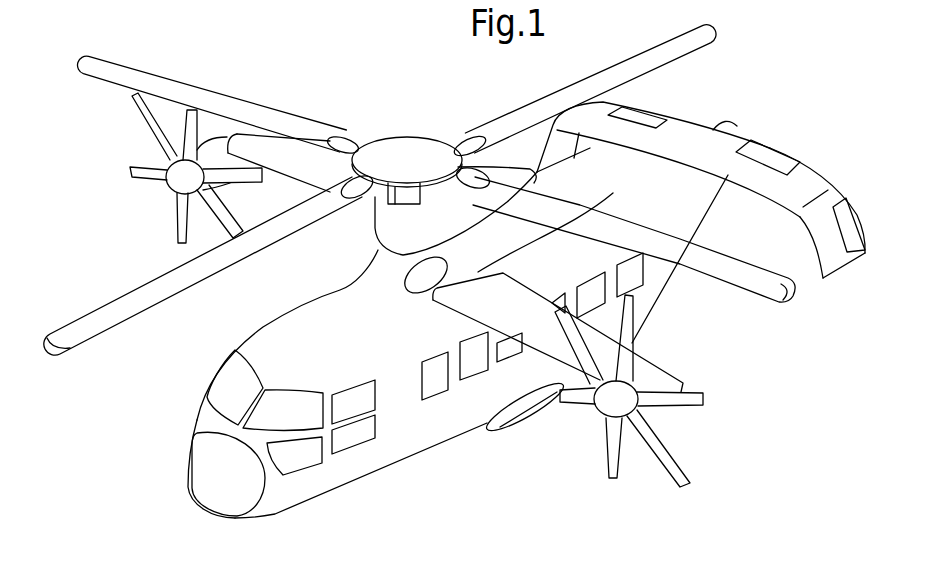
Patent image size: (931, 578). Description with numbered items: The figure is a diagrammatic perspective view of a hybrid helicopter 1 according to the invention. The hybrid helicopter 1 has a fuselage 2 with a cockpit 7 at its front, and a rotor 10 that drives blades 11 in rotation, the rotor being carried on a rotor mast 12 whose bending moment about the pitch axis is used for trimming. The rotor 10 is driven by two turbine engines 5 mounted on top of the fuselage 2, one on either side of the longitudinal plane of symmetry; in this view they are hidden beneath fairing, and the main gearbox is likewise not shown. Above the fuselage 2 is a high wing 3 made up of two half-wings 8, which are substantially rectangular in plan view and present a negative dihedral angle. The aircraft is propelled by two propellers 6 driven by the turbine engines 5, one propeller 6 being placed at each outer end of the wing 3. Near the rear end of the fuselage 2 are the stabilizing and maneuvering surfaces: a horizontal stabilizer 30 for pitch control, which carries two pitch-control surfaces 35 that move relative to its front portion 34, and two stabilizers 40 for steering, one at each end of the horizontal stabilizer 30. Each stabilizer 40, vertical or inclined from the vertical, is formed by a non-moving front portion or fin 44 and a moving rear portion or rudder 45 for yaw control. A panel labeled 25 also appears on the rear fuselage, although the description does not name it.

The hybrid helicopter 1 is at (513, 483).
The fuselage 2 is at (400, 467).
The high wing 3 is at (324, 253).
The turbine engines 5 is at (365, 124).
The propellers 6 is at (146, 173).
The cockpit 7 is at (213, 380).
The half-wings 8 is at (227, 157).
The rotor 10 is at (717, 294).
The blades 11 is at (785, 300).
The rotor mast 12 is at (400, 197).
The upper panel 25 is at (653, 117).
The horizontal stabilizer 30 is at (794, 148).
The front portion 34 is at (773, 183).
The pitch-control surfaces 35 is at (770, 150).
The stabilizers 40 is at (857, 188).
The non-moving front portions 44 is at (833, 272).
The moving rear portions 45 is at (840, 217).